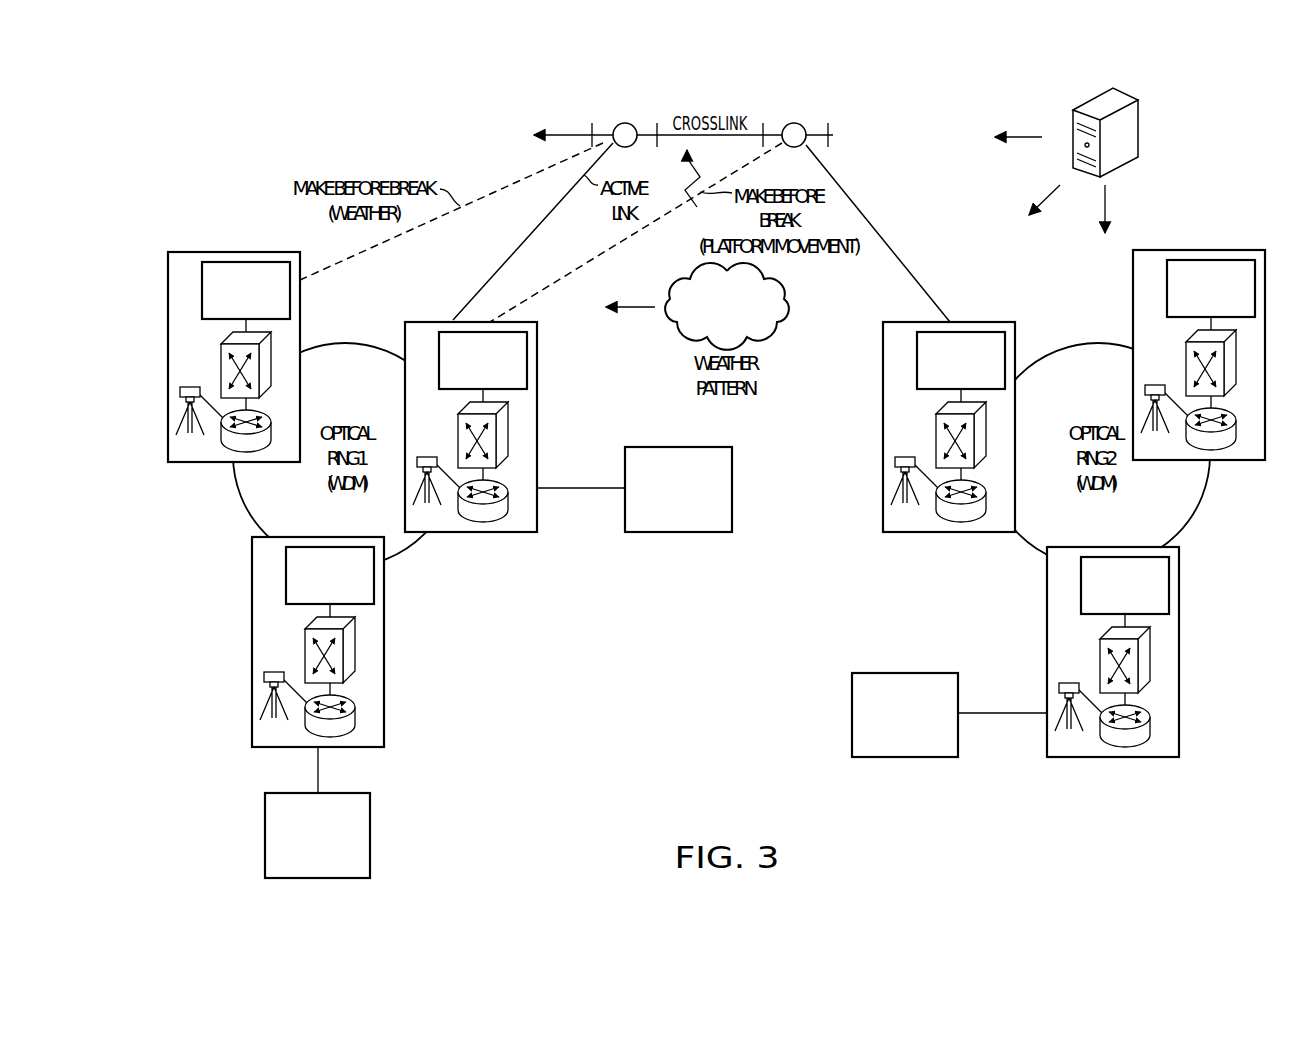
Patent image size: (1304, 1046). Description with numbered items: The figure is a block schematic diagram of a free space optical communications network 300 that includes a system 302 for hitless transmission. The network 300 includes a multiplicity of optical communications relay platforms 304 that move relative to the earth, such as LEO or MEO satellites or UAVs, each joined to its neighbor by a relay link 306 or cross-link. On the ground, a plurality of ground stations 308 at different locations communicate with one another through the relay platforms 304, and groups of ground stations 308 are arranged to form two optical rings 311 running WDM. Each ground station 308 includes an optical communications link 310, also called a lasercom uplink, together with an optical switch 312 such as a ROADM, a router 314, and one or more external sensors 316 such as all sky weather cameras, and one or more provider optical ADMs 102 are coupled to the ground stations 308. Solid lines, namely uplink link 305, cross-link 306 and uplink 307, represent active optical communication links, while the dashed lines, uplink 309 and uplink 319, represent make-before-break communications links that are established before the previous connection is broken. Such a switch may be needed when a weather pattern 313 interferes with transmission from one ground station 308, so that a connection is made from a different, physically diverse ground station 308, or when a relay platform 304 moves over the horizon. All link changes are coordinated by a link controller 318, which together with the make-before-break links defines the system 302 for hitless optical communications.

The free space optical communications network 300 is at (289, 136).
The system for hitless transmission 302 is at (1155, 122).
The optical communications relay platform 304 is at (590, 130).
The uplink link 305 is at (539, 227).
The relay link 306 is at (695, 192).
The uplink 307 is at (873, 226).
The ground station 308 is at (172, 252).
The uplink 309 is at (485, 198).
The optical communications link 310 is at (290, 290).
The optical ring 311 is at (355, 343).
The optical switch 312 is at (222, 340).
The weather pattern 313 is at (792, 308).
The router 314 is at (232, 452).
The external sensor 316 is at (190, 388).
The link controller 318 is at (1073, 105).
The uplink 319 is at (645, 228).
The provider optical ADM 102 is at (732, 490).